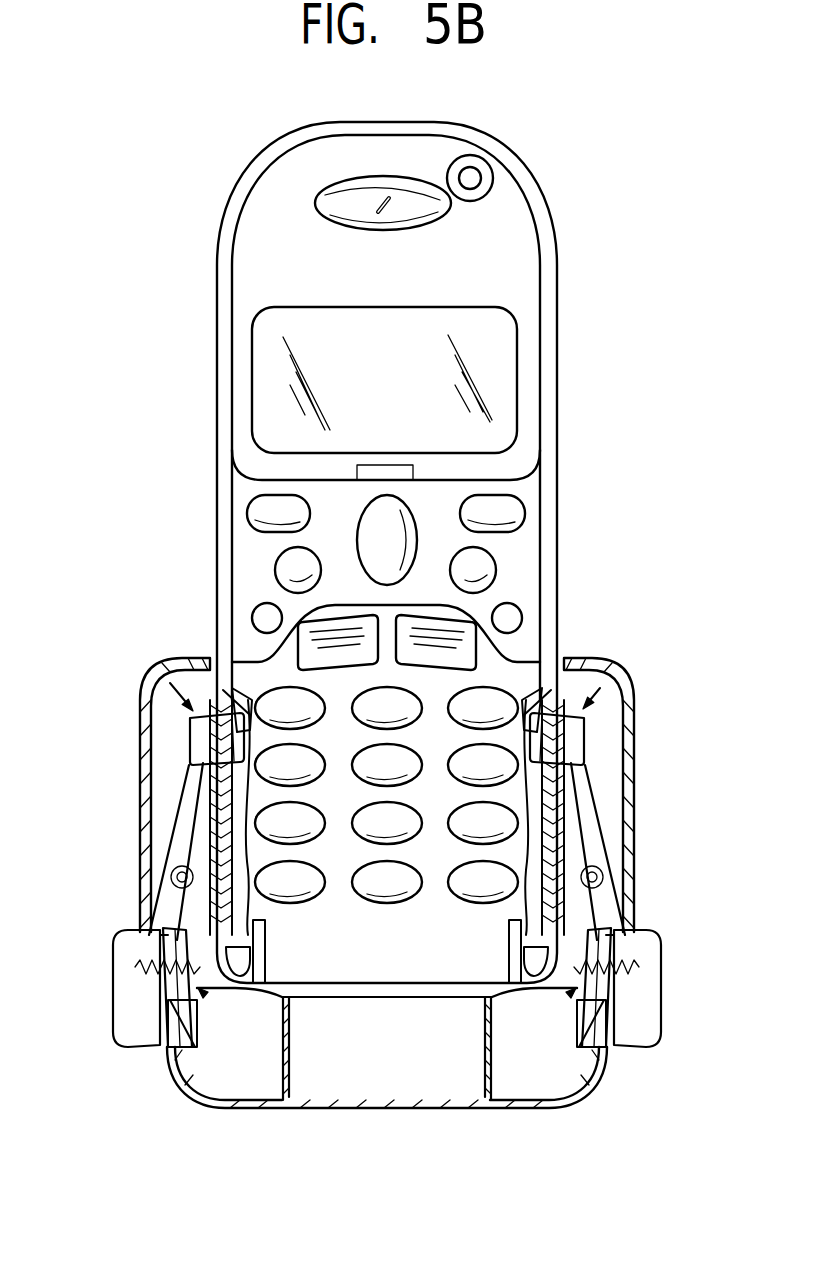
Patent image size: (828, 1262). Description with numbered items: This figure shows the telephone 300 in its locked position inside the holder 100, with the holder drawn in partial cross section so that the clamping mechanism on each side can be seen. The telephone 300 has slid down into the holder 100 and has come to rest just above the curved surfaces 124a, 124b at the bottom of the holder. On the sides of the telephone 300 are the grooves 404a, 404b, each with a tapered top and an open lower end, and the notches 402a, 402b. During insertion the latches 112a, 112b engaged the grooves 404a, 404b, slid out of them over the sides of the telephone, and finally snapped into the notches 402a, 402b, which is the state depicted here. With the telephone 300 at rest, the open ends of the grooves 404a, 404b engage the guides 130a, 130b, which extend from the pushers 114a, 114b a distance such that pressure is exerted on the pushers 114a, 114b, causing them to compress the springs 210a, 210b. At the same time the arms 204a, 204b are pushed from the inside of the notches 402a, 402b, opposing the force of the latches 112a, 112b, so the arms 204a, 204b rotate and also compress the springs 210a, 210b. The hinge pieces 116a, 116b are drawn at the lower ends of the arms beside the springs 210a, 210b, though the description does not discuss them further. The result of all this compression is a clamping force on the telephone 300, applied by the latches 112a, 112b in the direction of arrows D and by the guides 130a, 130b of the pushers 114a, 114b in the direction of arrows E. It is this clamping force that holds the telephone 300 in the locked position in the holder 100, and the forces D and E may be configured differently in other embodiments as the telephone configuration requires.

The telephone 300 is at (212, 246).
The holder 100 is at (150, 665).
The notch 402a is at (246, 712).
The notch 402b is at (528, 712).
The latch 112a is at (205, 745).
The latch 112b is at (565, 735).
The arm 204a is at (182, 782).
The arm 204b is at (590, 785).
The groove 404a is at (240, 937).
The groove 404b is at (535, 937).
The guide 130a is at (250, 972).
The guide 130b is at (524, 972).
The spring 210a is at (113, 985).
The spring 210b is at (648, 978).
The left hinge bracket 116a is at (160, 1028).
The right hinge bracket 116b is at (660, 1032).
The pusher 114a is at (165, 925).
The pusher 114b is at (587, 942).
The curved surface 124a is at (288, 985).
The curved surface 124b is at (490, 983).
The clamping force arrow D is at (170, 690).
The clamping force arrow E is at (203, 995).